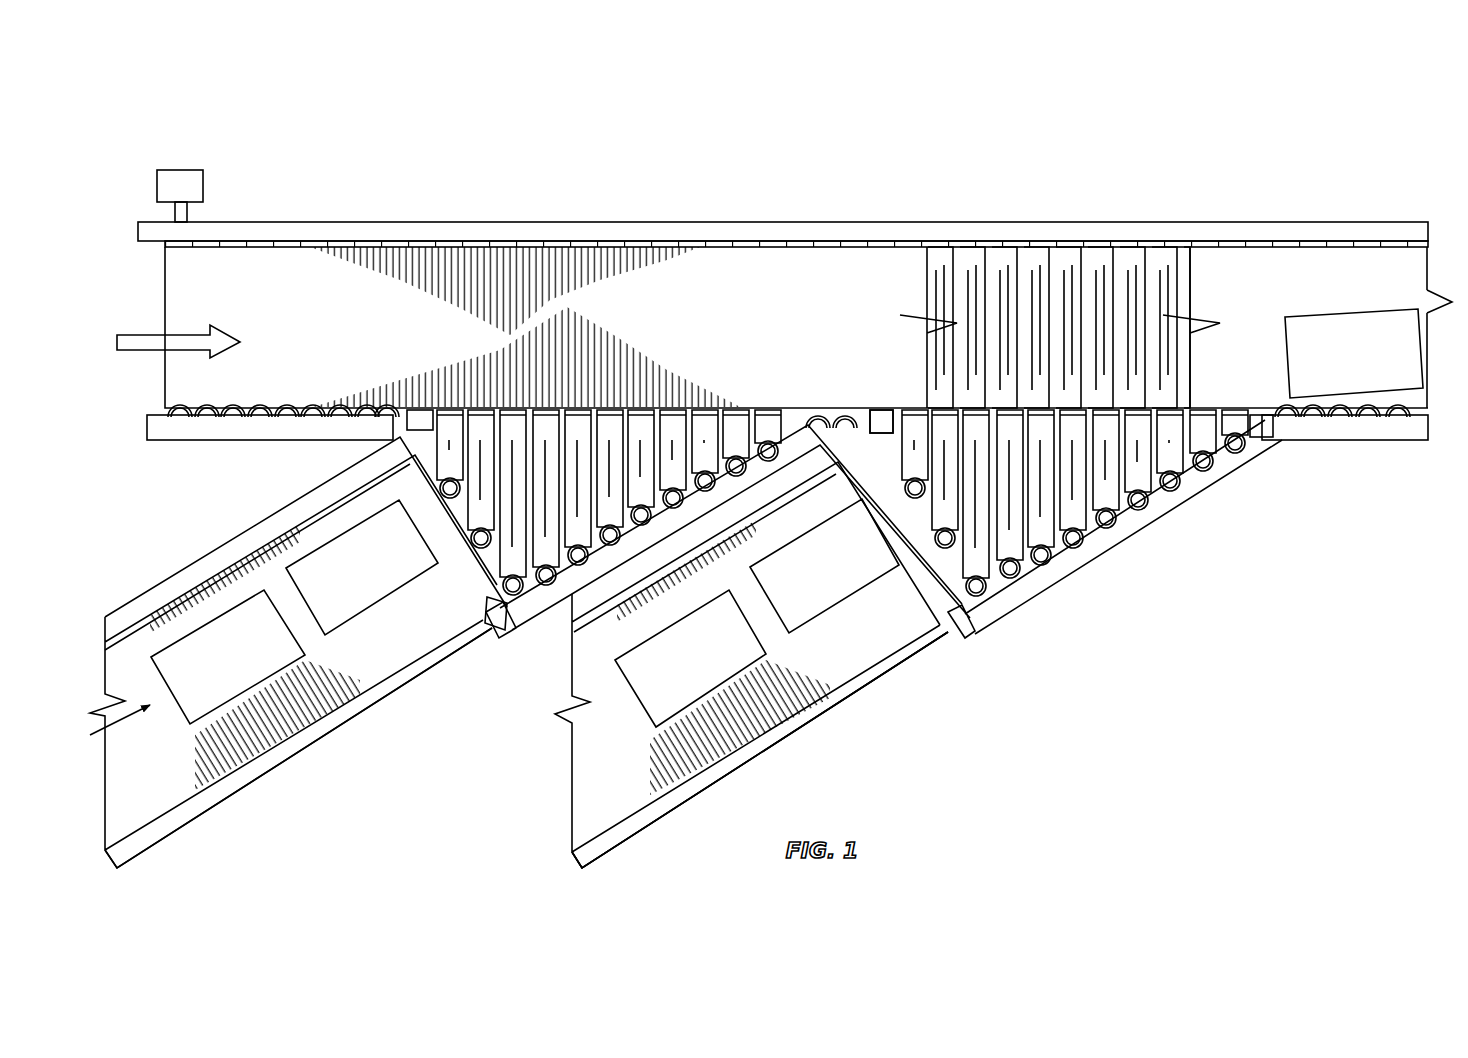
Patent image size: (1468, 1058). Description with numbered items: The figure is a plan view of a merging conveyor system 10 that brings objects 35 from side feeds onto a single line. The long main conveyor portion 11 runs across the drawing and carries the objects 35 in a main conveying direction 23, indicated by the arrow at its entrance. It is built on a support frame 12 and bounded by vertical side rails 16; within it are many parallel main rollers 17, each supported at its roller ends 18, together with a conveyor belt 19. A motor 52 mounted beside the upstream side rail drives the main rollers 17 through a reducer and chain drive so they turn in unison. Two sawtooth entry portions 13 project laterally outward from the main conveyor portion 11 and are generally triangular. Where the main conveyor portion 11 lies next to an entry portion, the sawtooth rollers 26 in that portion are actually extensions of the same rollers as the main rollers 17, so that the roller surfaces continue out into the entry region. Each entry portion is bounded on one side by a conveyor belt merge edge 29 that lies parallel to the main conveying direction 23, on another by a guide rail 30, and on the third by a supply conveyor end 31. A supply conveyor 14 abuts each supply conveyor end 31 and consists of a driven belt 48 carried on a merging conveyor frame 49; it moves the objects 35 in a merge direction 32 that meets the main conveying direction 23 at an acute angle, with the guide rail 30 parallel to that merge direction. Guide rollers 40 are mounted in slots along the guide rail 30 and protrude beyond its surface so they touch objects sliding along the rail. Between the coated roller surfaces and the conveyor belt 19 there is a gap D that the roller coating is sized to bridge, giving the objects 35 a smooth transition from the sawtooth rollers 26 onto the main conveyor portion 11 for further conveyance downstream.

The merging conveyor system 10 is at (236, 128).
The main conveyor portion 11 is at (783, 317).
The support frame 12 is at (493, 222).
The sawtooth entry portion 13 is at (503, 652).
The supply conveyor 14 is at (273, 782).
The side rails 16 is at (1277, 228).
The main rollers 17 is at (483, 240).
The roller ends 18 is at (1328, 242).
The conveyor belt 19 is at (333, 295).
The main conveying direction 23 is at (177, 356).
The sawtooth rollers 26 is at (1073, 245).
The conveyor belt merge edge 29 is at (528, 407).
The guide rail 30 is at (610, 553).
The supply conveyor end 31 is at (938, 549).
The merge direction 32 is at (127, 700).
The objects 35 is at (818, 571).
The guide rollers 40 is at (1223, 450).
The driven belt 48 is at (594, 812).
The merging conveyor frame 49 is at (345, 715).
The motor 52 is at (157, 187).
The gap D is at (901, 424).